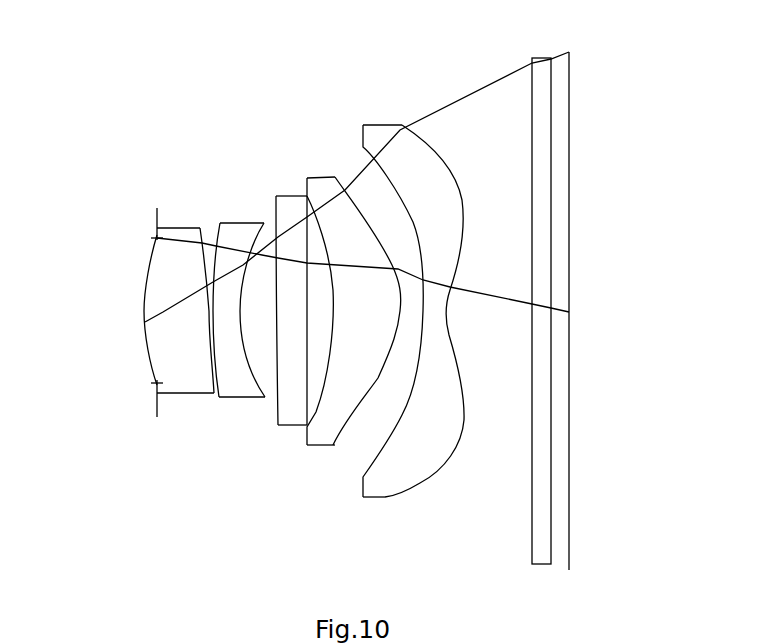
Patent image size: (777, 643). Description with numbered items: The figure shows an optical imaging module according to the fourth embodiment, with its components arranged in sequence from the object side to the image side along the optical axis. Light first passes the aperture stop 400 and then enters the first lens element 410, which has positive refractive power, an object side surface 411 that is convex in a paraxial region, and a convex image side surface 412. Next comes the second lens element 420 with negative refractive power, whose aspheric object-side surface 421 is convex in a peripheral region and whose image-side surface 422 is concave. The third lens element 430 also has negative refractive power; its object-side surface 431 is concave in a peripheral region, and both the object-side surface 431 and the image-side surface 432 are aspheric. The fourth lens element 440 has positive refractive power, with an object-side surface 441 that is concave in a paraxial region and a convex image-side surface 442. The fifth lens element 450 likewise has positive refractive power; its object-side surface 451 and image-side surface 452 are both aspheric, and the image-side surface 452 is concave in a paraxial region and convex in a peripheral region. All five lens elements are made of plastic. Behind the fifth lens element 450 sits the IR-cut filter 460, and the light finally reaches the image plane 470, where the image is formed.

The aperture stop 400 is at (152, 219).
The first lens element 410 is at (149, 305).
The object side surface of the first lens element 411 is at (147, 357).
The image side surface of the first lens element 412 is at (202, 363).
The second lens element 420 is at (219, 317).
The object-side surface of the second lens element 421 is at (212, 389).
The image-side surface of the second lens element 422 is at (246, 368).
The third lens element 430 is at (272, 318).
The object-side surface of the third lens element 431 is at (269, 419).
The image-side surface of the third lens element 432 is at (301, 384).
The fourth lens element 440 is at (335, 318).
The object-side surface of the fourth lens element 441 is at (304, 441).
The image-side surface of the fourth lens element 442 is at (337, 419).
The fifth lens element 450 is at (399, 315).
The object-side surface of the fifth lens element 451 is at (367, 469).
The image-side surface of the fifth lens element 452 is at (417, 484).
The IR-cut filter 460 is at (544, 55).
The image plane 470 is at (578, 85).